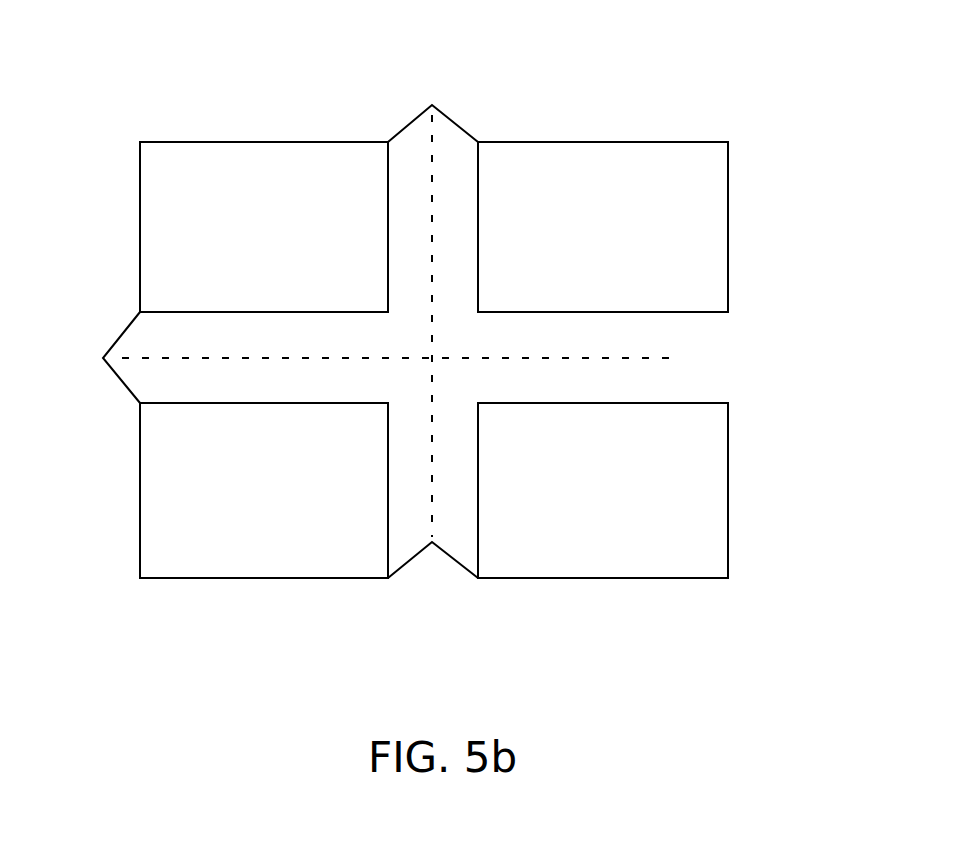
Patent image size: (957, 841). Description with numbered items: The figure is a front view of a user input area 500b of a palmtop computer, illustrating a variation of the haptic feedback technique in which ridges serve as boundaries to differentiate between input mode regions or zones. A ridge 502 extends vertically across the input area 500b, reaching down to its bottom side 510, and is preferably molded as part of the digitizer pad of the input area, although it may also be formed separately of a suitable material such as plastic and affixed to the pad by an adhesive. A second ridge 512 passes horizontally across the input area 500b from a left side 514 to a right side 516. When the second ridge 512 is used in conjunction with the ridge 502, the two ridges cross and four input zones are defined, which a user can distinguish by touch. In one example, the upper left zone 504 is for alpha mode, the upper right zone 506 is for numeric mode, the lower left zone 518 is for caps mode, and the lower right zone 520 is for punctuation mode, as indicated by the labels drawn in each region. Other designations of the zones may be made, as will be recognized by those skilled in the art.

The input area 500b is at (728, 142).
The ridge 502 is at (445, 112).
The first input zone 504 is at (153, 186).
The second input zone 506 is at (714, 214).
The bottom side 510 is at (272, 580).
The second ridge 512 is at (112, 368).
The left side 514 is at (140, 512).
The right side 516 is at (728, 486).
The input zone 518 is at (172, 566).
The input zone 520 is at (612, 568).